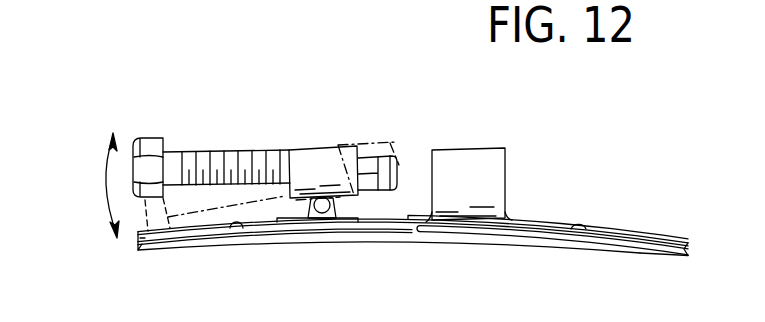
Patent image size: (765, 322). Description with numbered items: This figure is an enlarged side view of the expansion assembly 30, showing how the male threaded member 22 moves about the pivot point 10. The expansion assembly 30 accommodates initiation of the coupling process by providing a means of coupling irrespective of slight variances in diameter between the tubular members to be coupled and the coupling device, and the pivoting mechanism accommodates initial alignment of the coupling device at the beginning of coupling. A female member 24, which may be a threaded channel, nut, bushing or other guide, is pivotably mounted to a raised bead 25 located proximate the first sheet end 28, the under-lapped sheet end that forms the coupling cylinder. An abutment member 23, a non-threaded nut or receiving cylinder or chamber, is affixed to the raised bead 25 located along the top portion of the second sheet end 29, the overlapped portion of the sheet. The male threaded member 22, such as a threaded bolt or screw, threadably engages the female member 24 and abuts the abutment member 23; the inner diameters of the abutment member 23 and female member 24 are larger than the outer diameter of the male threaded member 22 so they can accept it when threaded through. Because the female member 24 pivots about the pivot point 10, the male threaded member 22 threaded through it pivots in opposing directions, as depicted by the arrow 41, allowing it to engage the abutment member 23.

The pivot point 10 is at (322, 208).
The male threaded member 22 is at (200, 153).
The abutment member 23 is at (473, 149).
The female member 24 is at (312, 168).
The raised bead 25 is at (230, 228).
The first sheet end 28 is at (535, 244).
The second sheet end 29 is at (586, 229).
The expansion assembly 30 is at (363, 118).
The arrow 41 is at (103, 182).